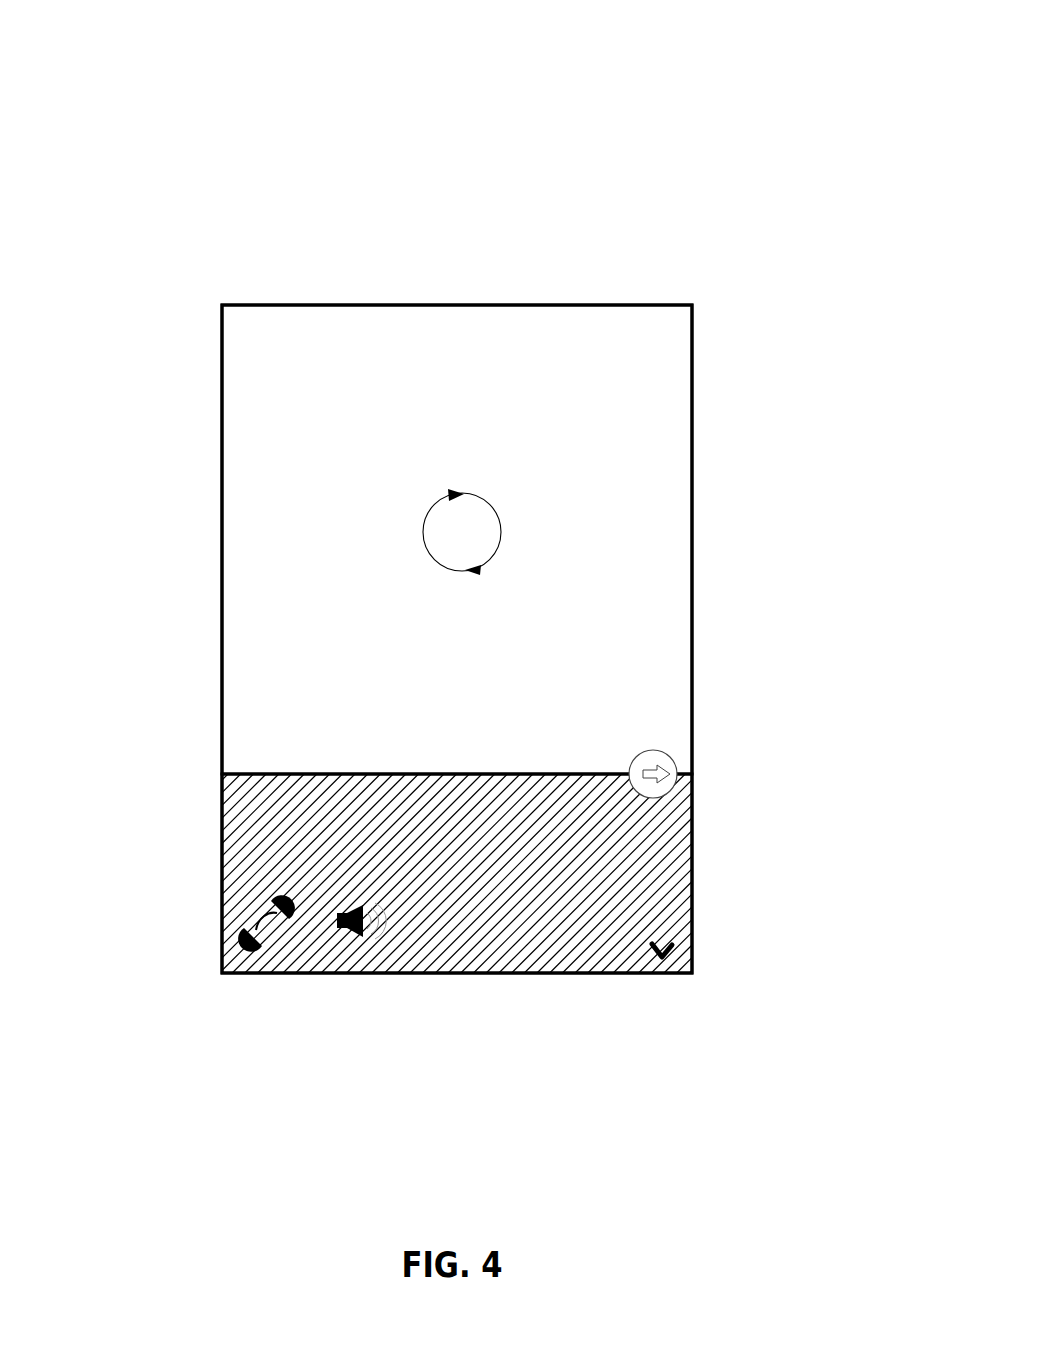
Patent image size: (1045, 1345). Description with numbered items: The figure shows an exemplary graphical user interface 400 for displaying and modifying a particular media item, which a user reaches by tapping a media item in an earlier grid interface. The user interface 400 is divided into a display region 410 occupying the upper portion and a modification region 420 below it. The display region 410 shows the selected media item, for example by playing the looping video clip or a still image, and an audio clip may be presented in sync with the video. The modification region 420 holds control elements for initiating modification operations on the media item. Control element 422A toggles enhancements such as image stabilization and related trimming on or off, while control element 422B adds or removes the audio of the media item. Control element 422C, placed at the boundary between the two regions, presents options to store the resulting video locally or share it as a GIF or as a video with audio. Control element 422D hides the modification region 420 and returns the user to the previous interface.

The user interface 400 is at (734, 118).
The display region 410 is at (222, 570).
The modification region 420 is at (222, 870).
The control element 422A is at (252, 941).
The control element 422B is at (345, 931).
The control element 422C is at (677, 768).
The control element 422D is at (665, 956).